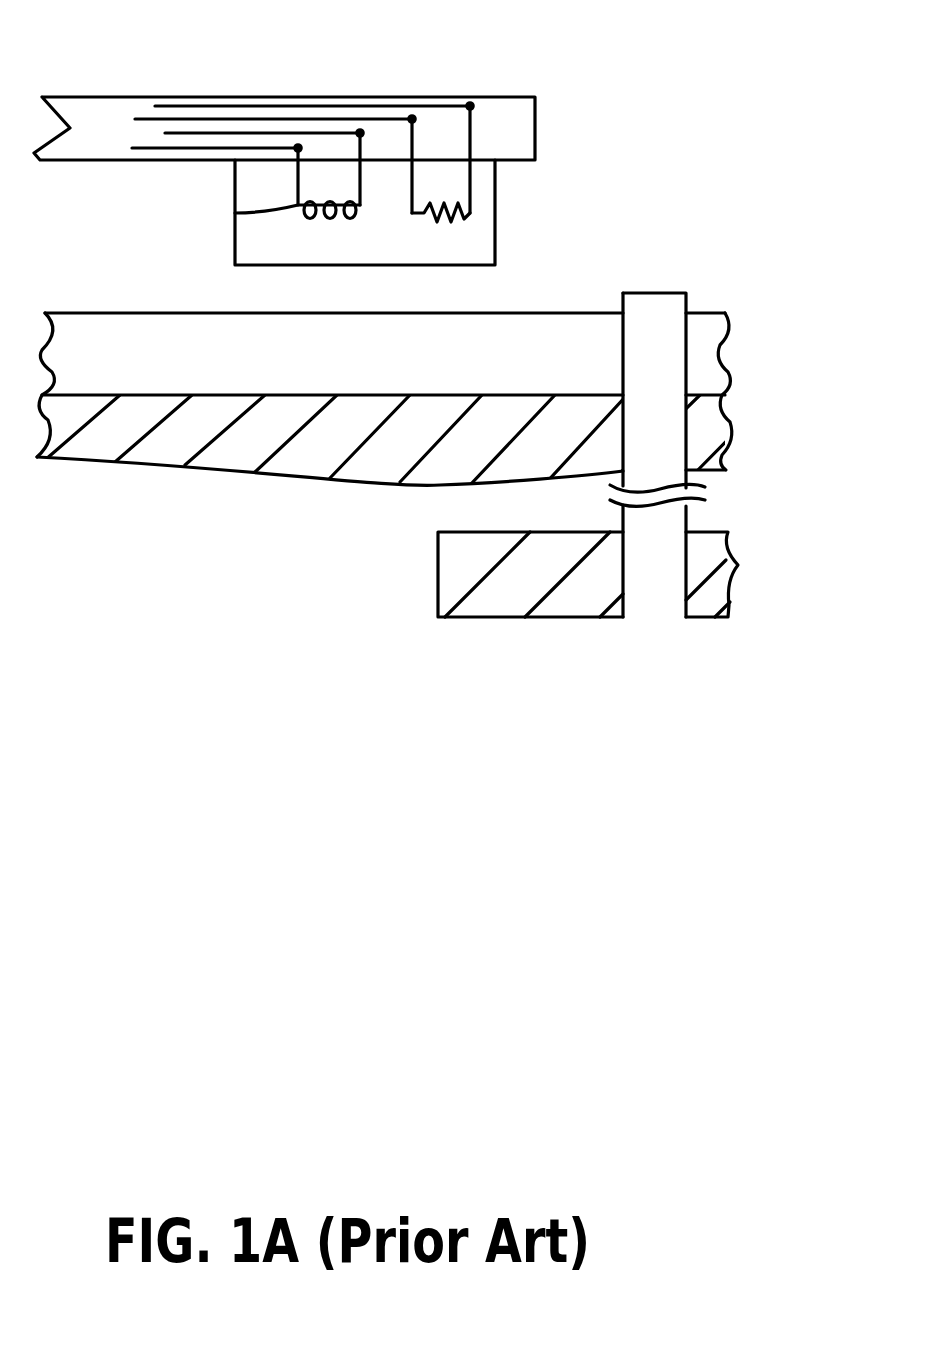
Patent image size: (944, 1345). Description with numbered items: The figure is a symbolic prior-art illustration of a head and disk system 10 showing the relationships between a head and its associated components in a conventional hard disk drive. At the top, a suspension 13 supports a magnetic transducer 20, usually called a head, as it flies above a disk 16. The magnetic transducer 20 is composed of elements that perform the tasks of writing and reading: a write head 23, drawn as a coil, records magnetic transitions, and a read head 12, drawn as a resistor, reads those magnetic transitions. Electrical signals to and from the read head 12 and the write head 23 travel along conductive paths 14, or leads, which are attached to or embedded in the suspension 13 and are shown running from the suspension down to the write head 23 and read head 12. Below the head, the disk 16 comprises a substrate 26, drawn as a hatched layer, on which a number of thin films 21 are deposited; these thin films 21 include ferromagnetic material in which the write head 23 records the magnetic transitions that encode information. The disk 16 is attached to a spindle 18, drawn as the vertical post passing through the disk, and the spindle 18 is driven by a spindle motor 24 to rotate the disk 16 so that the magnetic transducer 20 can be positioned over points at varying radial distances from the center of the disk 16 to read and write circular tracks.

The head and disk system 10 is at (698, 112).
The read head 12 is at (470, 213).
The suspension 13 is at (500, 134).
The conductive paths 14 is at (468, 178).
The disk 16 is at (57, 298).
The spindle 18 is at (675, 308).
The magnetic transducer 20 is at (506, 254).
The thin films 21 is at (436, 367).
The write head 23 is at (235, 213).
The spindle motor 24 is at (460, 566).
The substrate 26 is at (110, 442).